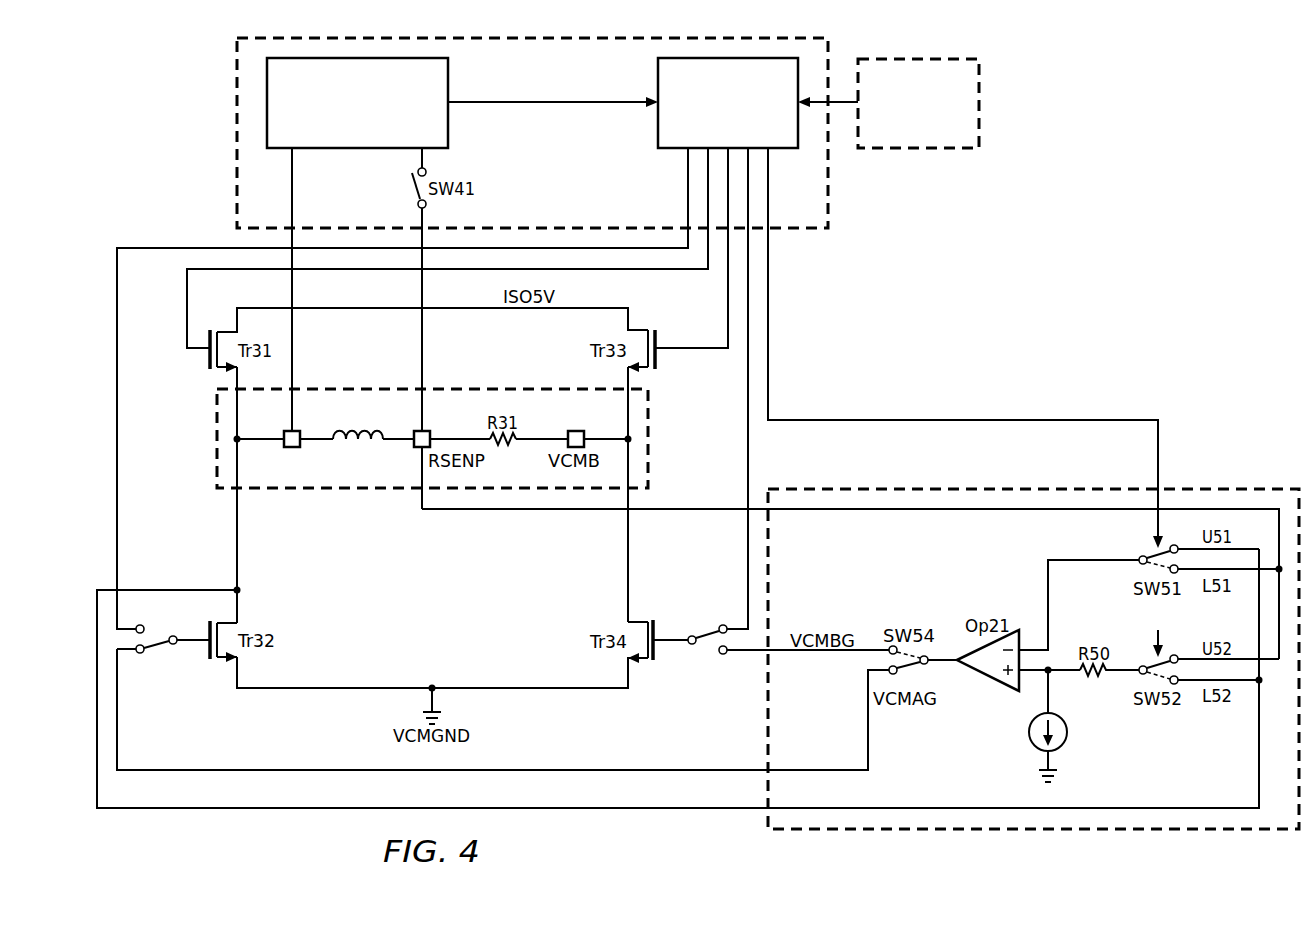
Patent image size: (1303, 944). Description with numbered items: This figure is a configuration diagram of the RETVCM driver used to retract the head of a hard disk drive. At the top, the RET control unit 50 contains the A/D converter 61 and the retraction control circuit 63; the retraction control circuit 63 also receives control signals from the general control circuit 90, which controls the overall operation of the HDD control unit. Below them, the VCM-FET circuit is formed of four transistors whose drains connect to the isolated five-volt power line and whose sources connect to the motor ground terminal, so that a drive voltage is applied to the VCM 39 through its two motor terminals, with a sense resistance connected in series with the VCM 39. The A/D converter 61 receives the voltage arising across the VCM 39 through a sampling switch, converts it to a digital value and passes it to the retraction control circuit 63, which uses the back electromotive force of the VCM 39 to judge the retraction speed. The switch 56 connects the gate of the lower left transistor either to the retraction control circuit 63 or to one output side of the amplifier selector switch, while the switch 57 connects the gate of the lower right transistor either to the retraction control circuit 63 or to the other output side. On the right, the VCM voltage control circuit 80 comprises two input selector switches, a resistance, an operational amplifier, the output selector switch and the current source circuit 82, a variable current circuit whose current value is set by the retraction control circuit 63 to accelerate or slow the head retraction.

The RET control unit 50 is at (229, 110).
The A/D converter 61 is at (449, 80).
The retraction control circuit 63 is at (656, 80).
The general control circuit 90 is at (982, 107).
The VCM 39 is at (325, 439).
The switch SW56 56 is at (158, 645).
The switch SW57 57 is at (706, 630).
The VCM voltage control circuit 80 is at (1224, 482).
The current source circuit 82 is at (1028, 733).